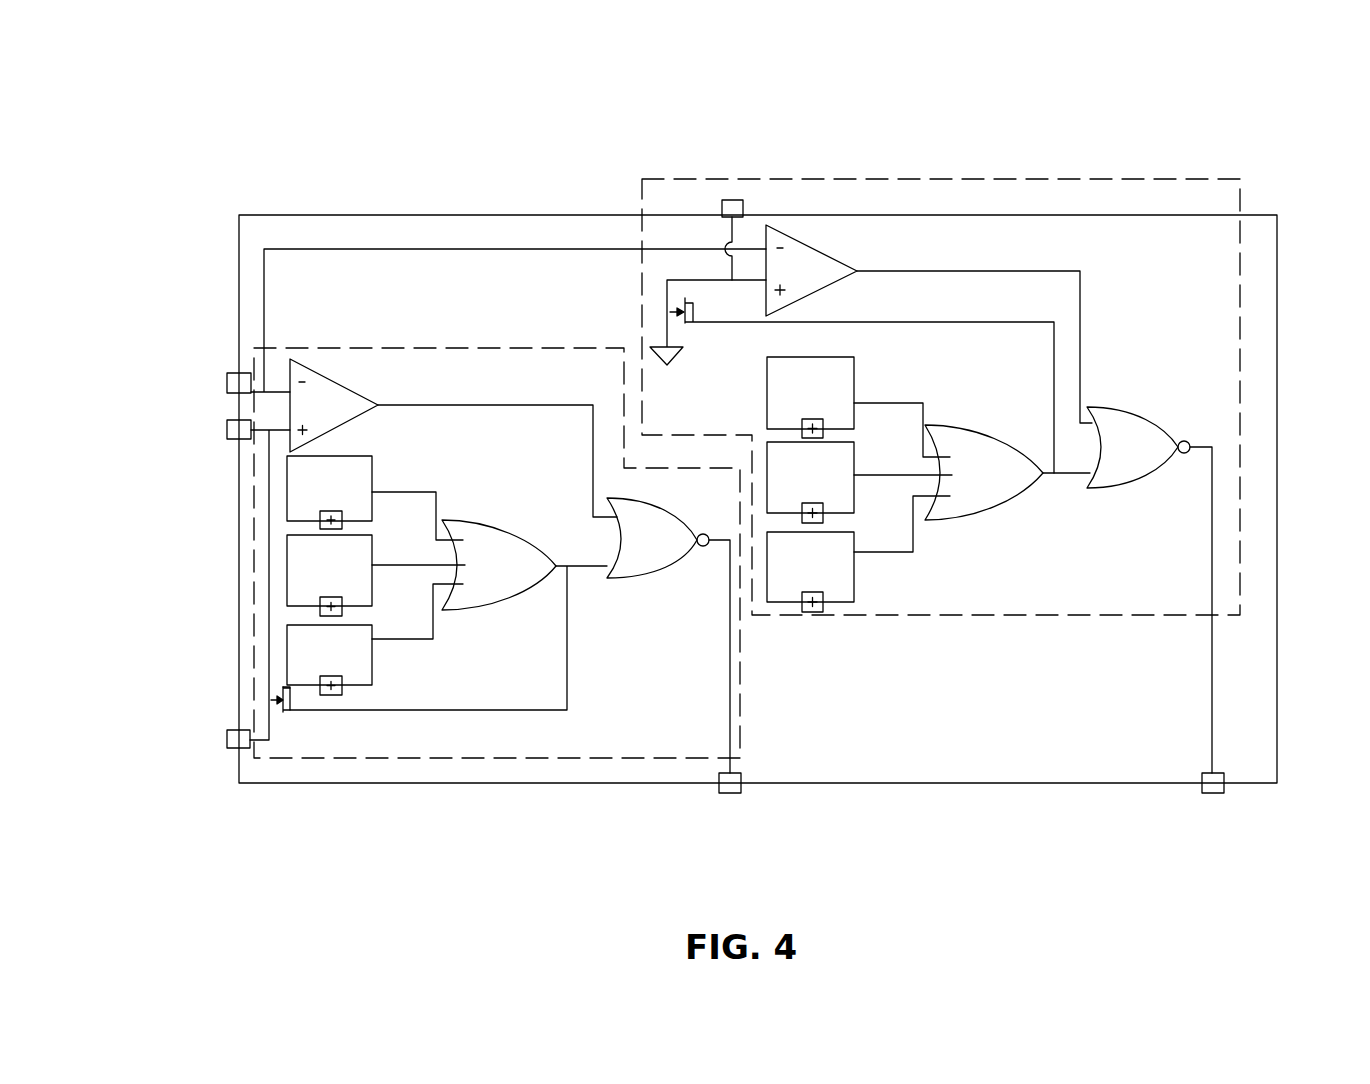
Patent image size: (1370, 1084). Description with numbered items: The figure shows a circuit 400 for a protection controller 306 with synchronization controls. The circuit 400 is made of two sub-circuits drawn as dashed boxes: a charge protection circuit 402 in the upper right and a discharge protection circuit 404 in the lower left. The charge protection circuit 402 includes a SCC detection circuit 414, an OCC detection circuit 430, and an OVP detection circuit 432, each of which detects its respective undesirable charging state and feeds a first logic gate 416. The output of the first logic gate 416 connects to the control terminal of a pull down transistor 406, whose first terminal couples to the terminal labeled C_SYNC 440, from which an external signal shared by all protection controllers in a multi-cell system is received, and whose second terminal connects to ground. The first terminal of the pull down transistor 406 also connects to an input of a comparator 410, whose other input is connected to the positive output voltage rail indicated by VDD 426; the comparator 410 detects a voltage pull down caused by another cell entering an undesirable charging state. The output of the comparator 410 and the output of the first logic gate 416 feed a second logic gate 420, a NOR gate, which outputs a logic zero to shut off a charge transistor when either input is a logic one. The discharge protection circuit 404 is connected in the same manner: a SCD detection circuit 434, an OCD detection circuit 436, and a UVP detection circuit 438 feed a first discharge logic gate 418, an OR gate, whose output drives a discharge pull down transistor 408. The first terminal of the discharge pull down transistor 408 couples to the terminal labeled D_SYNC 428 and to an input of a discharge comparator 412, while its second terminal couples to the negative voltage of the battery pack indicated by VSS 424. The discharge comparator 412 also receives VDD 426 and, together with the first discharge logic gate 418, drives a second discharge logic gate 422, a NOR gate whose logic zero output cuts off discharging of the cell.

The circuit 400 is at (133, 62).
The protection controller 306 is at (1277, 470).
The charge protection circuit 402 is at (1178, 182).
The discharge protection circuit 404 is at (650, 758).
The pull down transistor 406 is at (662, 312).
The discharge pull down transistor 408 is at (263, 693).
The comparator 410 is at (929, 324).
The discharge comparator 412 is at (453, 438).
The SCC detection circuit 414 is at (858, 407).
The first logic gate 416 is at (1007, 472).
The first discharge logic gate 418 is at (445, 615).
The second logic gate 420 is at (1149, 590).
The second discharge logic gate 422 is at (668, 635).
The VSS 424 is at (227, 748).
The VDD 426 is at (227, 373).
The D_SYNC 428 is at (227, 440).
The OCC detection circuit 430 is at (859, 482).
The OVP detection circuit 432 is at (858, 554).
The SCD detection circuit 434 is at (375, 498).
The OCD detection circuit 436 is at (376, 575).
The UVP detection circuit 438 is at (375, 639).
The C_SYNC 440 is at (722, 200).